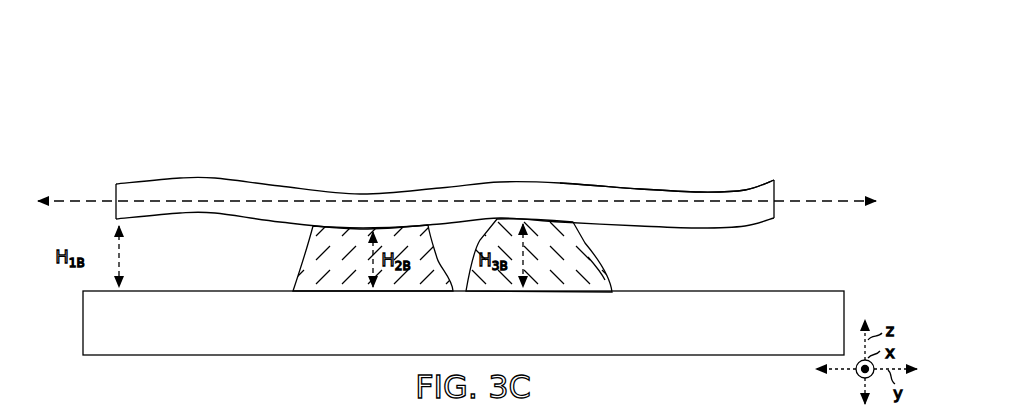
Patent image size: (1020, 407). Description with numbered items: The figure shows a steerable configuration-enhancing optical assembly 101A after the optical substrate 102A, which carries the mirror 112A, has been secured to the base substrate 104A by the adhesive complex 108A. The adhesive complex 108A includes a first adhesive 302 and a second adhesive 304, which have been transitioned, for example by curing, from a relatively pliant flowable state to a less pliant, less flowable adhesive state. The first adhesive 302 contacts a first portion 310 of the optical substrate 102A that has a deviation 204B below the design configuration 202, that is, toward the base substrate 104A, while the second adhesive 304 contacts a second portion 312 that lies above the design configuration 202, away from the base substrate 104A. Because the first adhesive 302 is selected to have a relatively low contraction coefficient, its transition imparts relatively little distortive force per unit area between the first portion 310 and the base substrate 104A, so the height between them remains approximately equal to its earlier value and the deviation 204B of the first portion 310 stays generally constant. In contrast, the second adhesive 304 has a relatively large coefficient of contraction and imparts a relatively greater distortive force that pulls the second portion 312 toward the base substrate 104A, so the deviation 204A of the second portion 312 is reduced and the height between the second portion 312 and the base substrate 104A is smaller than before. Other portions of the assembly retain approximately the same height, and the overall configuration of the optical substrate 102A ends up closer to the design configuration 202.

The steerable configuration-enhancing optical assembly 101A is at (666, 80).
The optical substrate 102A is at (345, 172).
The mirror 112A is at (774, 219).
The base substrate 104A is at (833, 338).
The adhesive complex 108A is at (354, 300).
The first adhesive 302 is at (352, 272).
The second adhesive 304 is at (542, 278).
The first portion 310 is at (400, 191).
The second portion 312 is at (518, 181).
The design configuration 202 is at (65, 200).
The deviation 204A is at (540, 182).
The deviation 204B is at (298, 227).